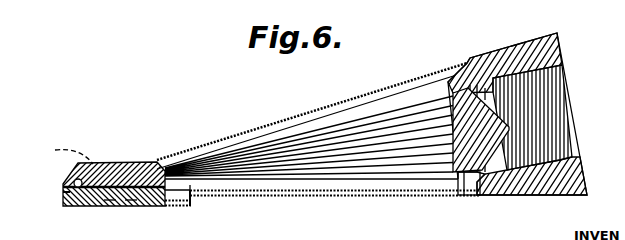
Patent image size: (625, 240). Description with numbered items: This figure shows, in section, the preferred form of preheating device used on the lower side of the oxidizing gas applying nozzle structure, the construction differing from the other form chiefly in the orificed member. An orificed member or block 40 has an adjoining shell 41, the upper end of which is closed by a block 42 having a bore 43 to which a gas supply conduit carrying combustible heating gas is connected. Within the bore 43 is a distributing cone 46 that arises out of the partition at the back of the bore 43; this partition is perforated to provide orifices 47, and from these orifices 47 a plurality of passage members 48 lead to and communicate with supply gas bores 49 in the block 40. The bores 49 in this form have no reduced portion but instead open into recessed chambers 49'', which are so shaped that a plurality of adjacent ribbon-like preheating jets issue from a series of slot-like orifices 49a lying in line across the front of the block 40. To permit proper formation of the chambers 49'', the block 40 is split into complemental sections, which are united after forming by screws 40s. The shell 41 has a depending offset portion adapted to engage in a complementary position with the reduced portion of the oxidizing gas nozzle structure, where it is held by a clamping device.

The orificed member or block 40 is at (113, 163).
The screws 40s is at (60, 152).
The shell 41 is at (295, 116).
The block 42 is at (509, 49).
The bore 43 is at (552, 108).
The distributing cone 46 is at (510, 126).
The orifices 47 is at (480, 178).
The passage members 48 is at (386, 168).
The supply gas bores 49 is at (138, 218).
The recessed chambers 49'' is at (100, 220).
The slot-like orifices 49a is at (64, 193).